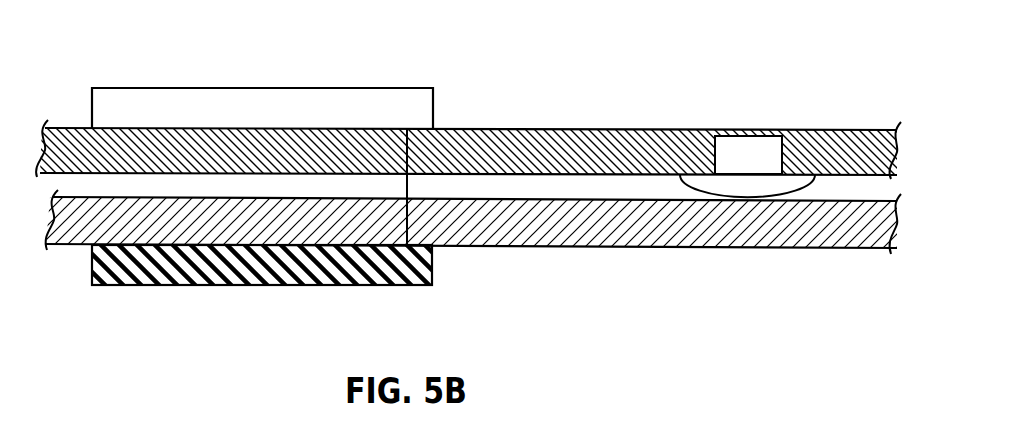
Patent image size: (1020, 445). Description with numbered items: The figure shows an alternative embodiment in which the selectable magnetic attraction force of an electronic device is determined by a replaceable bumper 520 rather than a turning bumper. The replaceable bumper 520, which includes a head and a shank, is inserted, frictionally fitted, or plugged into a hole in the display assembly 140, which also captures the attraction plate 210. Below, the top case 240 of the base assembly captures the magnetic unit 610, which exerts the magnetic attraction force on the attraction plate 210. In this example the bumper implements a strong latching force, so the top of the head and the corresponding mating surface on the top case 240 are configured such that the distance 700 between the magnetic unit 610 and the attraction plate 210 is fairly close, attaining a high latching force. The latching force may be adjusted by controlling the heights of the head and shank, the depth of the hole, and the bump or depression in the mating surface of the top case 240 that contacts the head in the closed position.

The display assembly 140 is at (675, 140).
The attraction plate 210 is at (375, 100).
The top case 240 is at (635, 238).
The replaceable bumper 520 is at (796, 152).
The magnetic unit 610 is at (433, 263).
The distance 700 is at (411, 189).